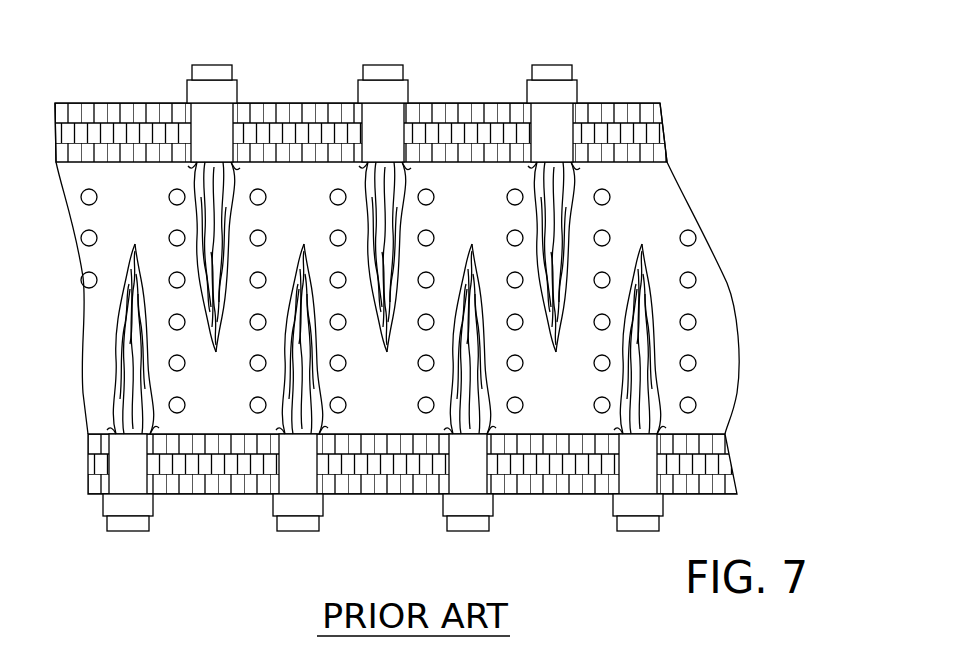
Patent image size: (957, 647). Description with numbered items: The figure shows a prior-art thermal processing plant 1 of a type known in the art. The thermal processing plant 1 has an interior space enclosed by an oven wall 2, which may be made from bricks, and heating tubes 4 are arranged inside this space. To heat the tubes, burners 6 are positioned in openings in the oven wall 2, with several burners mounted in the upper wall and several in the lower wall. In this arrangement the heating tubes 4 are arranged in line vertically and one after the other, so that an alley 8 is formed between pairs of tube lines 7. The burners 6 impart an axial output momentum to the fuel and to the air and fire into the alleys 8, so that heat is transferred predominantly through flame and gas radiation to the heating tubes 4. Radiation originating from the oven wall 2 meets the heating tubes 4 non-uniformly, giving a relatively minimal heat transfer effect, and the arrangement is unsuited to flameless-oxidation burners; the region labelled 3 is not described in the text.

The thermal processing plant 1 is at (693, 105).
The oven wall 2 is at (657, 152).
The combustion chamber 3 is at (655, 229).
The heating tubes 4 is at (435, 268).
The burners 6 is at (238, 82).
The tube lines 7 is at (332, 230).
The alley 8 is at (312, 236).